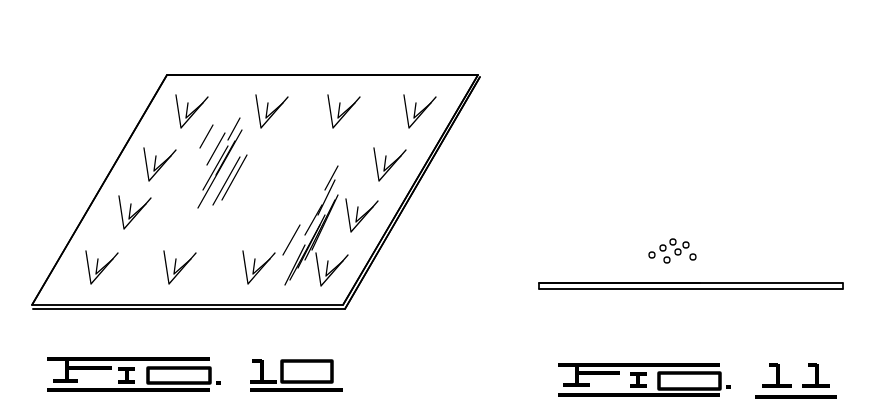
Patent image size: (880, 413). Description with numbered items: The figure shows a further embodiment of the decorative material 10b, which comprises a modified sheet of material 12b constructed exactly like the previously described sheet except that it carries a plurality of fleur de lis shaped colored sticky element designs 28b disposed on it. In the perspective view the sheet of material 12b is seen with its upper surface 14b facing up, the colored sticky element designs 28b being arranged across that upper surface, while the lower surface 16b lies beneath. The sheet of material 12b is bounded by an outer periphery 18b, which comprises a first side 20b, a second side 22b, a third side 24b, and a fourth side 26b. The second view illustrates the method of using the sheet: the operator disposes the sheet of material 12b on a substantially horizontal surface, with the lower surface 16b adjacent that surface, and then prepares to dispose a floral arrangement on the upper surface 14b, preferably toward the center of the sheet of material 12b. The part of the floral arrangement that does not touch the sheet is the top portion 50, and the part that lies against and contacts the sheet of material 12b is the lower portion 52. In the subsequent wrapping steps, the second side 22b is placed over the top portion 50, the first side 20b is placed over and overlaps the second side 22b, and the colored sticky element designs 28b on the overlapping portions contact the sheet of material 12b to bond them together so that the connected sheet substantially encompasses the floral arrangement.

In FIG. 10, the decorative material 10b is at (418, 62).
In FIG. 11, the decorative material 10b is at (738, 208).
In FIG. 10, the sheet of material 12b is at (190, 68).
In FIG. 11, the sheet of material 12b is at (785, 274).
In FIG. 10, the upper surface 14b is at (335, 160).
In FIG. 11, the upper surface 14b is at (607, 283).
In FIG. 11, the lower surface 16b is at (590, 290).
In FIG. 10, the outer periphery 18b is at (390, 232).
In FIG. 10, the first side 20b is at (418, 183).
In FIG. 11, the first side 20b is at (845, 290).
In FIG. 10, the second side 22b is at (106, 178).
In FIG. 11, the second side 22b is at (539, 286).
In FIG. 10, the third side 24b is at (322, 74).
In FIG. 10, the fourth side 26b is at (192, 312).
In FIG. 10, the colored sticky element designs 28b is at (415, 110).
In FIG. 11, the top portion 50 is at (671, 239).
In FIG. 11, the lower portion 52 is at (697, 259).